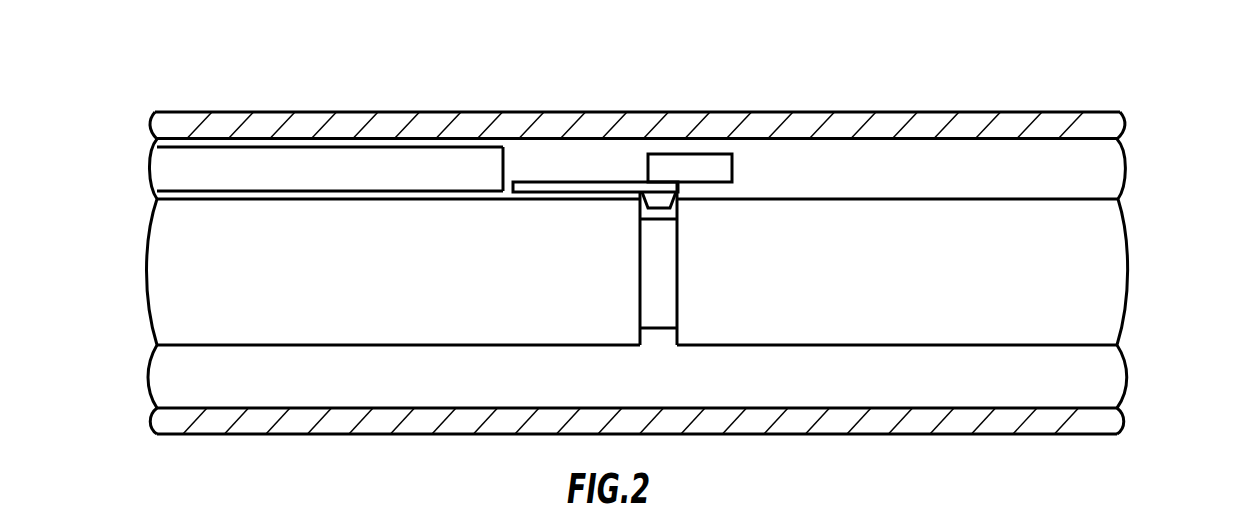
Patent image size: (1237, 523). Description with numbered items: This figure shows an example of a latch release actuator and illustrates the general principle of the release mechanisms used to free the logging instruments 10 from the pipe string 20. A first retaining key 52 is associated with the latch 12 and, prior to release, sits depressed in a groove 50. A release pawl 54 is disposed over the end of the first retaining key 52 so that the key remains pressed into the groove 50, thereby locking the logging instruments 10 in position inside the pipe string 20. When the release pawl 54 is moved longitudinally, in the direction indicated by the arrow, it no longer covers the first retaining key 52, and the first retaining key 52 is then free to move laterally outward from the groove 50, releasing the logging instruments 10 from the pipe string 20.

The logging instruments 10 is at (1100, 239).
The latch 12 is at (180, 165).
The pipe string 20 is at (377, 436).
The groove 50 is at (660, 330).
The first retaining key 52 is at (582, 182).
The release pawl 54 is at (707, 155).